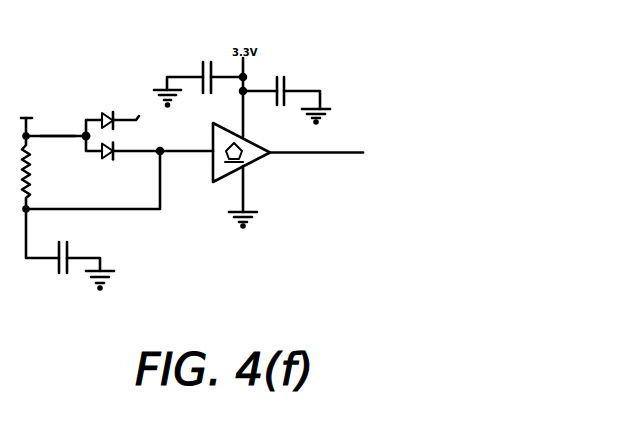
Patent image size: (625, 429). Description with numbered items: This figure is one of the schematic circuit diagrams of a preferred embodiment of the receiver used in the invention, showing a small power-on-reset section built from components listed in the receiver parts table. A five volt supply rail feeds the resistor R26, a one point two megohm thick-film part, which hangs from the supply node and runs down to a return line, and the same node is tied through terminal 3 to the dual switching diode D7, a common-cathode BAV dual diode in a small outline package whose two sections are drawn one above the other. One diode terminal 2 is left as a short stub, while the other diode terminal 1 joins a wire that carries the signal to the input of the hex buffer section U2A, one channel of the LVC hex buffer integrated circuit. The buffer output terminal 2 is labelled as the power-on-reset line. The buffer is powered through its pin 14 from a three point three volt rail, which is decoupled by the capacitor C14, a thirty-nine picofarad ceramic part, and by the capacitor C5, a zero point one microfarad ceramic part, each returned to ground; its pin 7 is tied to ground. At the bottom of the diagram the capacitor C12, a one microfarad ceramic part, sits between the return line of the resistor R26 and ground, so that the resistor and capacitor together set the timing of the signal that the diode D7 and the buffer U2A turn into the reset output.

The resistor R26 is at (40, 172).
The dual switching diode D7 is at (109, 143).
The capacitor C12 is at (70, 249).
The capacitor C14 is at (198, 77).
The capacitor C5 is at (286, 92).
The hex buffer U2A is at (266, 169).
The diode pin 3 is at (57, 130).
The pin 1 net 1 is at (163, 144).
The pin 2 output POR 2 is at (251, 131).
The supply pin 14 is at (236, 97).
The ground pin 7 is at (242, 197).